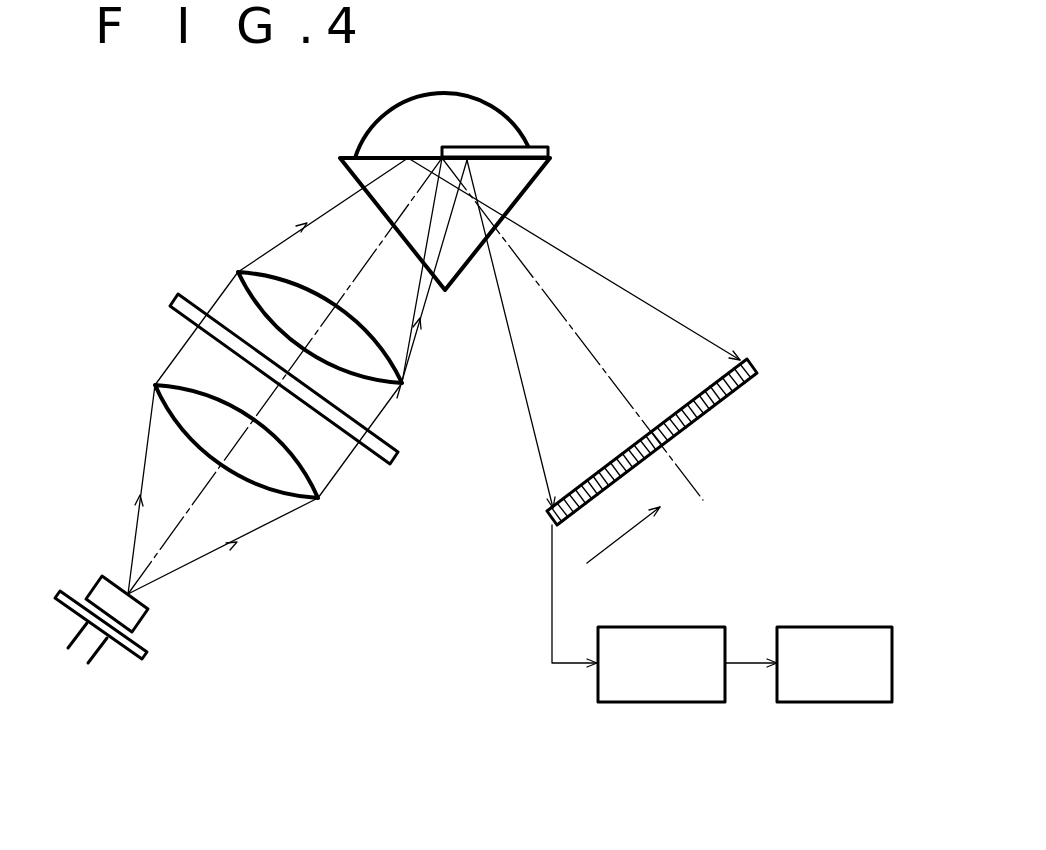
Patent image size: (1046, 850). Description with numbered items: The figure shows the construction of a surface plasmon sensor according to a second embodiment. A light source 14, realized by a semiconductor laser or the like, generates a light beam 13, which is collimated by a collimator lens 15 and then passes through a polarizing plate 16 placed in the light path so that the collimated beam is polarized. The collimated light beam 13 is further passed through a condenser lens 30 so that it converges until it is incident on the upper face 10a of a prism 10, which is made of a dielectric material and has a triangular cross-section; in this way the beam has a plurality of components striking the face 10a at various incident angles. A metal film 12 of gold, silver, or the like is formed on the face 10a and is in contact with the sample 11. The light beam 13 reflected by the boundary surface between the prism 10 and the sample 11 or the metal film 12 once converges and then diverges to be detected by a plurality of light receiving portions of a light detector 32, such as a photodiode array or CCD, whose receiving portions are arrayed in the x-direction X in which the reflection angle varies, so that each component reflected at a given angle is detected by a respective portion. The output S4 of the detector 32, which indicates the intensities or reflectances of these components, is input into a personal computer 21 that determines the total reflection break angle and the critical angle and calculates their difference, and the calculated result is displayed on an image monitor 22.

The prism 10 is at (323, 158).
The upper face of the prism 10a is at (355, 158).
The sample 11 is at (488, 114).
The metal film 12 is at (543, 148).
The light beam 13 is at (222, 290).
The light source 14 is at (98, 595).
The collimator lens 15 is at (167, 390).
The polarizing plate 16 is at (177, 302).
The condenser lens 30 is at (263, 280).
The light detector 32 is at (747, 357).
The personal computer 21 is at (637, 702).
The image monitor 22 is at (828, 702).
The output of the optical detector S4 is at (552, 638).
The x-direction X is at (629, 535).